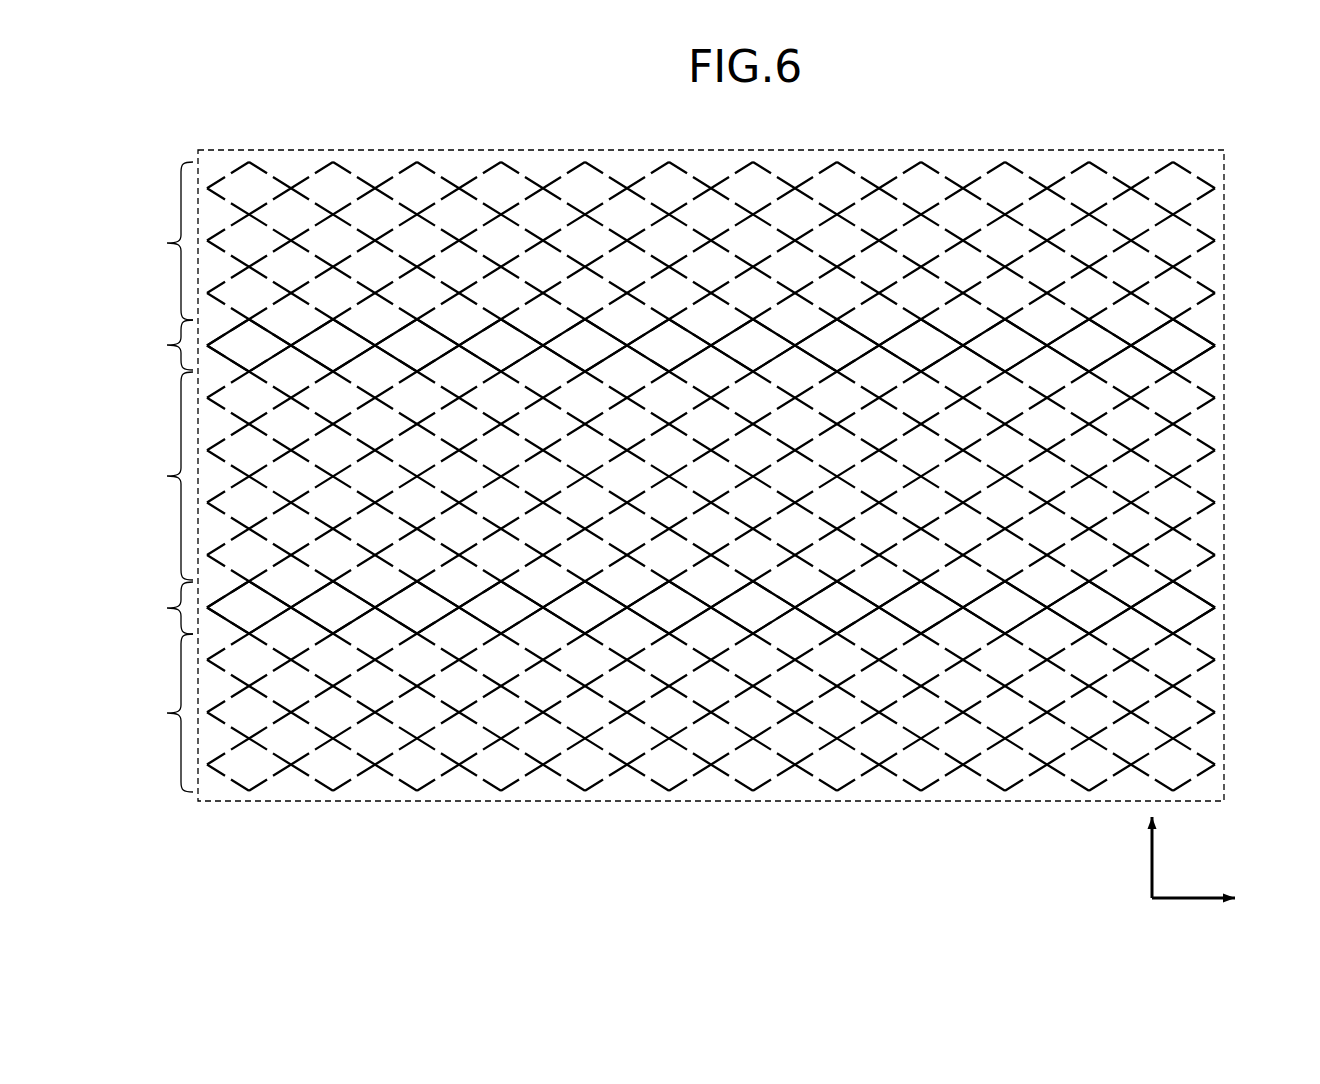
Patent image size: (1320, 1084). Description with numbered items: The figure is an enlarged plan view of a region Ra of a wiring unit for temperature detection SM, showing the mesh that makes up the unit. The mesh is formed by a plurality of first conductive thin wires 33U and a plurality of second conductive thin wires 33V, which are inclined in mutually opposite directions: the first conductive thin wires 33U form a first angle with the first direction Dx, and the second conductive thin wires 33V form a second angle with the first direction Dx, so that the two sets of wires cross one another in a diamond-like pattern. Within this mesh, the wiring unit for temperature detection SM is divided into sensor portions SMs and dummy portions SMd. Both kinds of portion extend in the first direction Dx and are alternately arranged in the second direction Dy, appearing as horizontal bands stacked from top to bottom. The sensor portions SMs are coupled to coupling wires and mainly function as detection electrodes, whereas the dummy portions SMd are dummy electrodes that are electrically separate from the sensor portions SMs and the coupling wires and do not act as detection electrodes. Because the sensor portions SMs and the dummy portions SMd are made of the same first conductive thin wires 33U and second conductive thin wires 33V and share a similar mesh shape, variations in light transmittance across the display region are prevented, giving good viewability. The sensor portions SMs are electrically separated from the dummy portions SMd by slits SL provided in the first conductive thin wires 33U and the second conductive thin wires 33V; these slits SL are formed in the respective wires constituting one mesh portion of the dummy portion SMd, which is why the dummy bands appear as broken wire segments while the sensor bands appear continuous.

The wiring unit for temperature detection SM is at (747, 476).
The dummy portion SMd is at (153, 477).
The sensor portion SMs is at (665, 476).
The slit SL is at (317, 298).
The first conductive thin wire 33U is at (1068, 160).
The second conductive thin wire 33V is at (1027, 160).
The region Ra is at (218, 150).
The first direction Dx is at (1185, 903).
The second direction Dy is at (1152, 865).